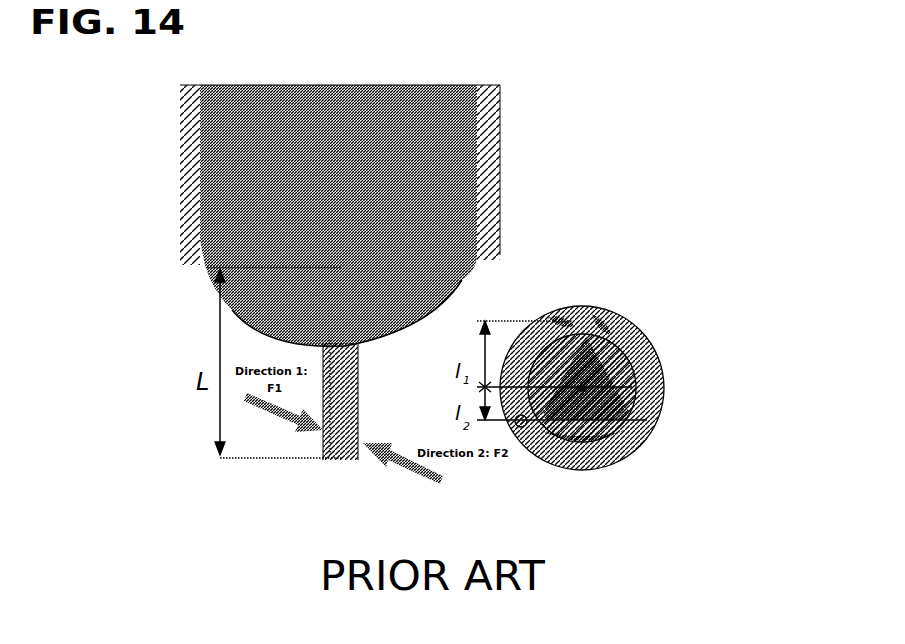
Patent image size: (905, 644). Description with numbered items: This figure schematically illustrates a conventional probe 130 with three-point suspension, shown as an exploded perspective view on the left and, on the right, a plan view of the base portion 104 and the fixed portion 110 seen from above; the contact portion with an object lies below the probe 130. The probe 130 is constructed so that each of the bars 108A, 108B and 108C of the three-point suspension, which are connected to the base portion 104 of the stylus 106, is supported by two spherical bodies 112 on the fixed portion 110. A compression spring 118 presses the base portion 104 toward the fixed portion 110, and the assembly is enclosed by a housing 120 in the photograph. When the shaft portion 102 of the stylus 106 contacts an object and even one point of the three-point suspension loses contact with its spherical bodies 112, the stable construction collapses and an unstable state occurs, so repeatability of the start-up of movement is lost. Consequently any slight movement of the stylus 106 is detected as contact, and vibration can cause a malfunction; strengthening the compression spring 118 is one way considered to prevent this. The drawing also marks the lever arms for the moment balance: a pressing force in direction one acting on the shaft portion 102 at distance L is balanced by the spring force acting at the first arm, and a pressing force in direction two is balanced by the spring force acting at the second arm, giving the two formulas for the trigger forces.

The shaft portion 102 is at (252, 337).
The base portion 104 is at (255, 342).
The stylus 106 is at (140, 308).
The bar 108A is at (580, 308).
The bar 108B is at (207, 237).
The bar 108C is at (451, 298).
The fixed portion 110 is at (455, 262).
The spherical bodies 112 is at (363, 346).
The compression spring 118 is at (317, 197).
The housing 120 is at (193, 120).
The probe 130 is at (236, 486).